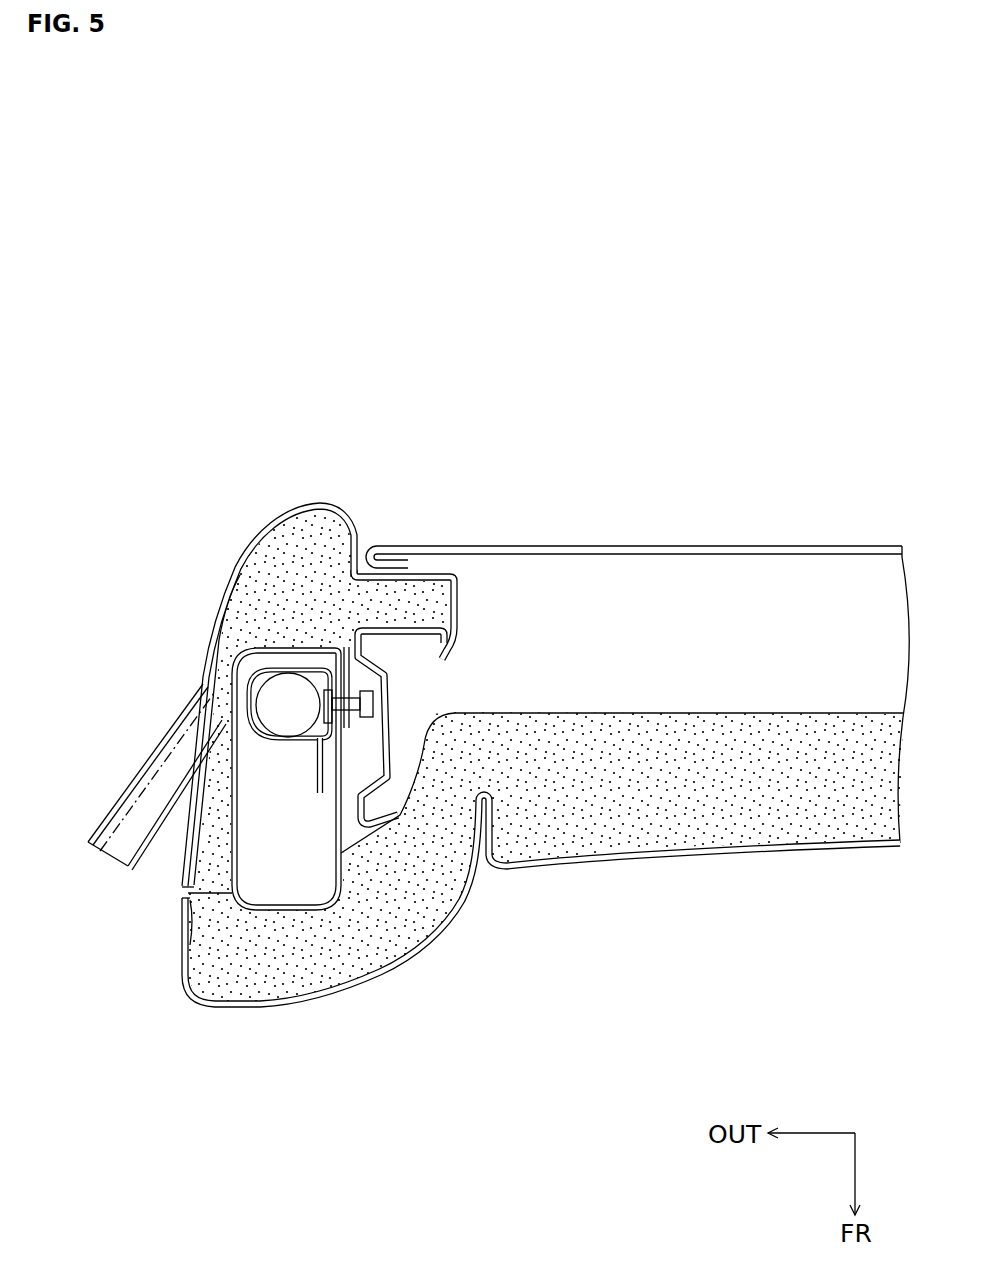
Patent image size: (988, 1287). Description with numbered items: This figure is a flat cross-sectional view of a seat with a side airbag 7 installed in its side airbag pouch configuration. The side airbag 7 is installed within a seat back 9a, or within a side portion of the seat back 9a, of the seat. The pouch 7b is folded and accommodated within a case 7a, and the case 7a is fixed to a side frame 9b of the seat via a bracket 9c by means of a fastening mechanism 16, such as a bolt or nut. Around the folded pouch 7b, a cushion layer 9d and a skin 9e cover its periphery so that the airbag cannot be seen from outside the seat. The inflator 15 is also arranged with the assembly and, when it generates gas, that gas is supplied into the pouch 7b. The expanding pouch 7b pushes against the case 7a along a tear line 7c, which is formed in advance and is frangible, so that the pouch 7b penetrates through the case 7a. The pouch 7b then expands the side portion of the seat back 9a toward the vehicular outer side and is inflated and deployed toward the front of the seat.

The side airbag 7 is at (342, 872).
The case 7a is at (322, 892).
The pouch 7b is at (285, 897).
The tear line 7c is at (203, 1000).
The seat back 9a is at (773, 543).
The side frame 9b is at (392, 710).
The bracket 9c is at (375, 620).
The cushion layer 9d is at (258, 600).
The skin 9e is at (264, 528).
The inflator 15 is at (256, 673).
The fastening mechanism 16 is at (380, 715).